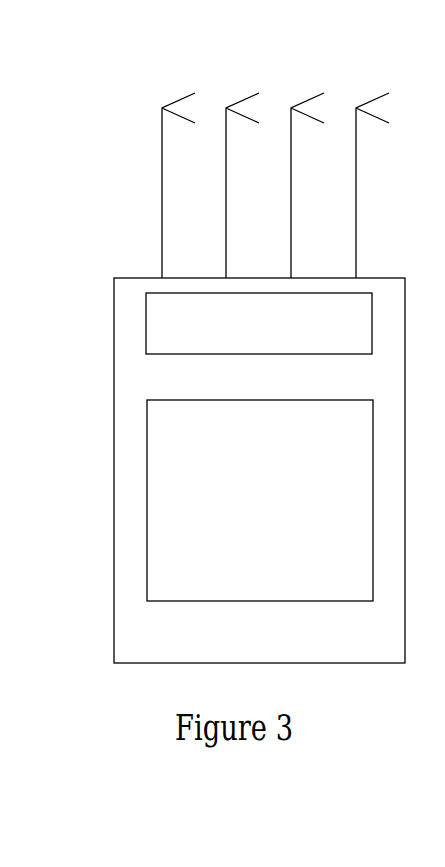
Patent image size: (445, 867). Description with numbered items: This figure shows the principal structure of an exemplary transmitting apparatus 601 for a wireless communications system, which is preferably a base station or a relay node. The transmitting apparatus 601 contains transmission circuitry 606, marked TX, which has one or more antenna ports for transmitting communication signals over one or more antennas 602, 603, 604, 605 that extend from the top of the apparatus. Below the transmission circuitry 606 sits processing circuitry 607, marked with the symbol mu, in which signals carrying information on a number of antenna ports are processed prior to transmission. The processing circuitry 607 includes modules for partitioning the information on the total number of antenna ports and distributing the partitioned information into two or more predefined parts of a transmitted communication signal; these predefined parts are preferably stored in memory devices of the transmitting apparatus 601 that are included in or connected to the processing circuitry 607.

The transmitting apparatus 601 is at (405, 308).
The antenna 602 is at (160, 138).
The antenna 603 is at (225, 138).
The antenna 604 is at (290, 138).
The antenna 605 is at (355, 138).
The transmission circuitry 606 is at (147, 342).
The processing circuitry 607 is at (147, 478).